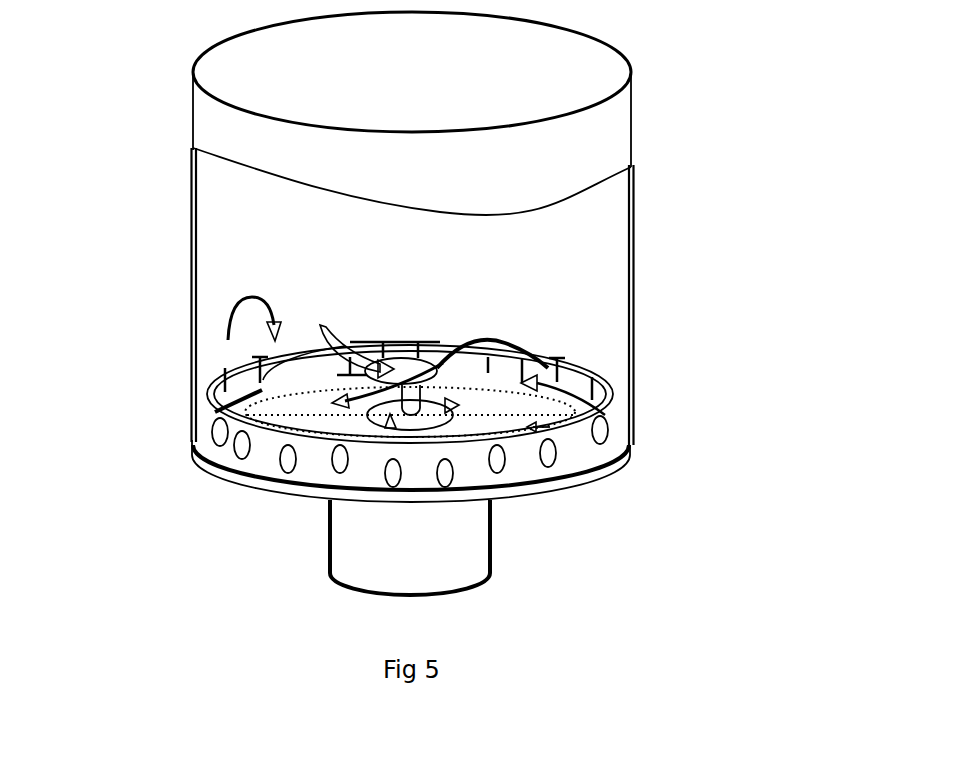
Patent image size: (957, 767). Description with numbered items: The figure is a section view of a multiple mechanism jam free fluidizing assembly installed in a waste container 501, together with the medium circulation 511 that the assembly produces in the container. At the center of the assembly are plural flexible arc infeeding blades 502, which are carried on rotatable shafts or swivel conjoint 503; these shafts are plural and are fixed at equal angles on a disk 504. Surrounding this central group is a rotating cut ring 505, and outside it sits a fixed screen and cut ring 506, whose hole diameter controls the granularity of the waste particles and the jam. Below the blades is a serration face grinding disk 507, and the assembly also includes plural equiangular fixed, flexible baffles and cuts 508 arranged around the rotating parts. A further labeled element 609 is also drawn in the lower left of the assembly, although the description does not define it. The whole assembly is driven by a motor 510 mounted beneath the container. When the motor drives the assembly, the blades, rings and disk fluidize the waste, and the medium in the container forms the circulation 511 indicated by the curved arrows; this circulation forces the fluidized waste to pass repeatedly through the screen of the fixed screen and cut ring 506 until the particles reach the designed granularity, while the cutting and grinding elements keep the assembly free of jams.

The waste container 501 is at (263, 253).
The medium circulation 511 is at (250, 298).
The plural equiangular fixed, flexible baffles and cuts 508 is at (313, 370).
The flow arrow 609 is at (343, 405).
The fixed screen and cut ring 506 is at (290, 458).
The plural flexible arc infeeding blades 502 is at (407, 340).
The rotatable shafts or swivel conjoint 503 is at (482, 342).
The disk 504 is at (540, 366).
The rotating cut ring 505 is at (533, 388).
The serration face grinding disk 507 is at (485, 413).
The motor 510 is at (470, 520).